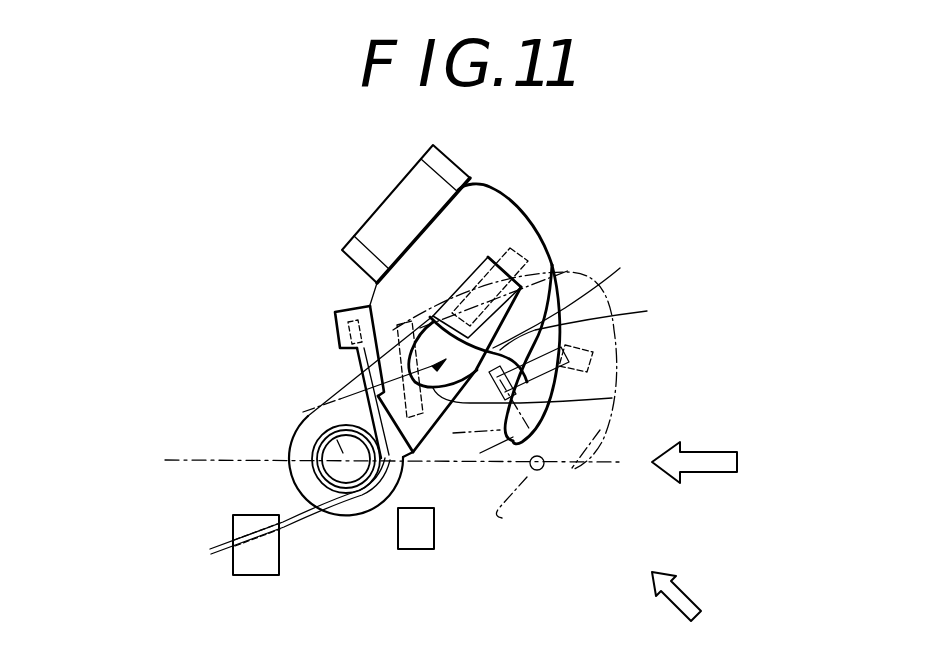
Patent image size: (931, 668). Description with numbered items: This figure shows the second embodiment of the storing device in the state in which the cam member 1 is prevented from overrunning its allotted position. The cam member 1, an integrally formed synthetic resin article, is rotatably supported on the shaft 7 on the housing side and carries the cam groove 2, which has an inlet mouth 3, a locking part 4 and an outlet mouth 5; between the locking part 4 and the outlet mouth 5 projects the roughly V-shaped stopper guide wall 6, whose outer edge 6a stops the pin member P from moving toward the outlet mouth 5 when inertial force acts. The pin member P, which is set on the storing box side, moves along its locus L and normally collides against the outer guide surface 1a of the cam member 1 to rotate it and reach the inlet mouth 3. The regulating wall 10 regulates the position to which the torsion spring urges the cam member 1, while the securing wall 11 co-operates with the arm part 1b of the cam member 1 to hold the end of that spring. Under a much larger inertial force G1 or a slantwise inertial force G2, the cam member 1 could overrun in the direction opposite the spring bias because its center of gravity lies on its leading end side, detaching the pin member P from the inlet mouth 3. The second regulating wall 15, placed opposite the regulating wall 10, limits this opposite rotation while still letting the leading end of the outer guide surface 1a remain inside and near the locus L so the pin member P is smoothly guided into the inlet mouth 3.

The cam member 1 is at (483, 213).
The outer guide surface 1a is at (543, 247).
The arm part 1b is at (335, 313).
The cam groove 2 is at (365, 363).
The inlet mouth 3 is at (483, 417).
The locking part 4 is at (584, 321).
The outlet mouth 5 is at (420, 327).
The stopper guide wall 6 is at (539, 320).
The outer edge 6a is at (612, 400).
The shaft 7 is at (325, 421).
The regulating wall 10 is at (416, 534).
The securing wall 11 is at (248, 563).
The second regulating wall 15 is at (400, 200).
The locus of movement of the pin member L is at (378, 460).
The pin member P is at (537, 471).
The inertial force G1 is at (722, 463).
The inertial force G2 is at (696, 600).